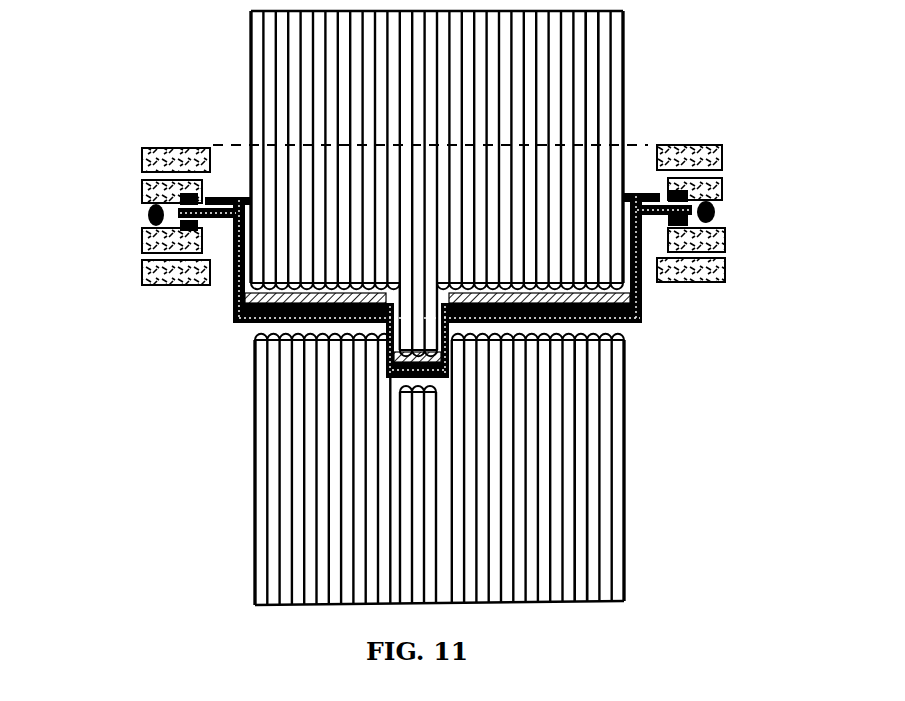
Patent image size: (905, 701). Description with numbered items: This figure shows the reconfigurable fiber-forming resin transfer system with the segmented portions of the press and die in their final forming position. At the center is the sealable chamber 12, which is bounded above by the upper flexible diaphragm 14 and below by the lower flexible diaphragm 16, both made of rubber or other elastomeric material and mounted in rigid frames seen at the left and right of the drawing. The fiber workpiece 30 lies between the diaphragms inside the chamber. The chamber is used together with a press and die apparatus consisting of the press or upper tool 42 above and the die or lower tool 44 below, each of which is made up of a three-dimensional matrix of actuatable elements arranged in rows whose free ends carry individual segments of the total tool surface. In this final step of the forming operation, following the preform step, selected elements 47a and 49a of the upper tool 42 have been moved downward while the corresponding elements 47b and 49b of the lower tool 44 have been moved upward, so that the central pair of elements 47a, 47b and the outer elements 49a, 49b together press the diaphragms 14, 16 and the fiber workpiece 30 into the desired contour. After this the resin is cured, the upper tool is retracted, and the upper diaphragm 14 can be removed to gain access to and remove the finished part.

The sealable chamber 12 is at (123, 142).
The upper flexible diaphragm 14 is at (638, 172).
The lower flexible diaphragm 16 is at (232, 298).
The fiber workpiece 30 is at (641, 312).
The press or upper tool 42 is at (250, 95).
The die or lower tool 44 is at (628, 358).
The selected actuatable elements of the upper tool 47a is at (424, 266).
The selected actuatable elements of the lower tool 47b is at (392, 405).
The selected actuatable elements of the upper tool 49a is at (588, 180).
The selected actuatable elements of the lower tool 49b is at (590, 410).